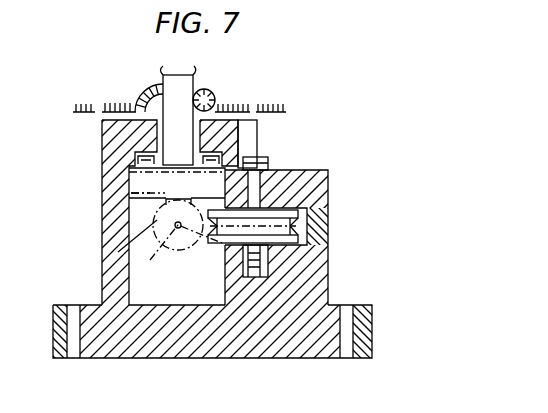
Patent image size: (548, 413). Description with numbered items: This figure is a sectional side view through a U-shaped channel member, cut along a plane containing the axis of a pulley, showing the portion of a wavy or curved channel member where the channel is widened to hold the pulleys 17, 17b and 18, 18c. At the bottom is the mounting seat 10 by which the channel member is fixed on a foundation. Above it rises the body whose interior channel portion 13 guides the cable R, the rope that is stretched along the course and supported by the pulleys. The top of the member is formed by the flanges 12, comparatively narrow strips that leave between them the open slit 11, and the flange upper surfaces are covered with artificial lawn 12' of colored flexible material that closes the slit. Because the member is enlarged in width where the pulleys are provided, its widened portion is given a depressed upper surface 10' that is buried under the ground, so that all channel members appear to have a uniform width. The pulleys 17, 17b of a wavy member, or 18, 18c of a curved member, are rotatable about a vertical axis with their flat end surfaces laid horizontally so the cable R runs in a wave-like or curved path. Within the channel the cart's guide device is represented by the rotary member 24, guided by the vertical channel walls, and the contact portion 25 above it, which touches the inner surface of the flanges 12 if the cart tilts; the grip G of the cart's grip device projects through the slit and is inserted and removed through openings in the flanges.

The mounting seat 10 is at (191, 323).
The depressed upper surface 10' is at (276, 222).
The open slit 11 is at (197, 92).
The flange 12 is at (274, 206).
The artificial lawn 12' is at (179, 85).
The channel portion 13 is at (143, 285).
The rope pulley 17 is at (306, 223).
The rope pulley 17b is at (285, 231).
The pulley 18 is at (326, 217).
The pulley 18c is at (326, 217).
The rotary member 24 is at (147, 193).
The contact portion 25 is at (140, 161).
The grip G is at (128, 228).
The cable R is at (102, 260).